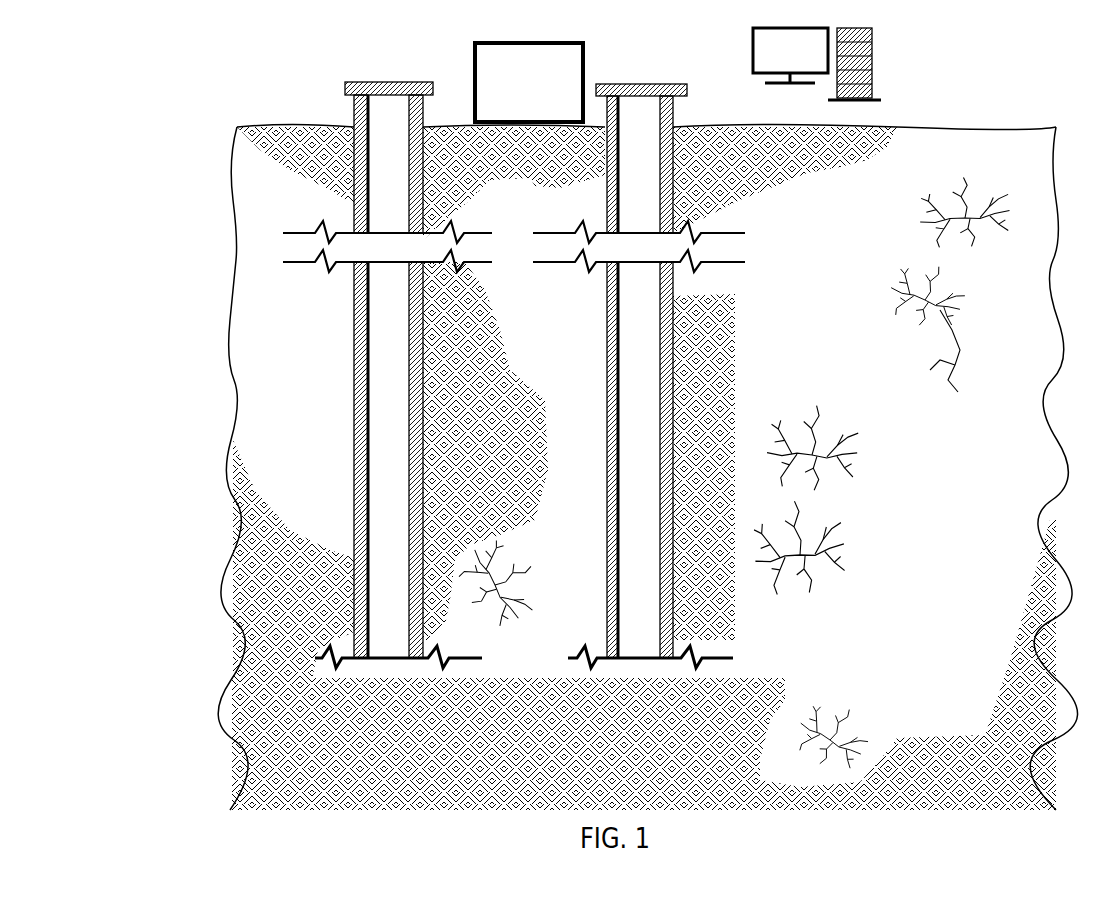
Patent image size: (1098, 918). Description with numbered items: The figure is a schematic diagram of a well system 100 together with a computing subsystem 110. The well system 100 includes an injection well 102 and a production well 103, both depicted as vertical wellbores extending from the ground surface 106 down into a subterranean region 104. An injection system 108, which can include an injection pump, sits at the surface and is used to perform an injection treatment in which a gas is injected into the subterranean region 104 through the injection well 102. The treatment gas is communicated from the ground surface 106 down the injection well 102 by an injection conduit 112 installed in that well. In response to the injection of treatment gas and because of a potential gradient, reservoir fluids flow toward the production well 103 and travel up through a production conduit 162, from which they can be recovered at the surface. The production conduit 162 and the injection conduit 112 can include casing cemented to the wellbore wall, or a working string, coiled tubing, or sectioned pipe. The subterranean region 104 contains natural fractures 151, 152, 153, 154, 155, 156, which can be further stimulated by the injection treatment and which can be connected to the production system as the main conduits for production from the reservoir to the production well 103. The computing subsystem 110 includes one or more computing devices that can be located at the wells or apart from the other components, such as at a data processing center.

The well system 100 is at (205, 75).
The injection well 102 is at (607, 285).
The production well 103 is at (354, 290).
The subterranean region 104 is at (528, 173).
The ground surface 106 is at (1056, 128).
The injection system 108 is at (545, 93).
The computing subsystem 110 is at (873, 52).
The injection conduit 112 is at (617, 349).
The production conduit 162 is at (366, 350).
The natural fracture 151 is at (902, 222).
The natural fracture 152 is at (880, 305).
The natural fracture 153 is at (868, 470).
The natural fracture 154 is at (836, 587).
The natural fracture 155 is at (866, 728).
The natural fracture 156 is at (530, 588).